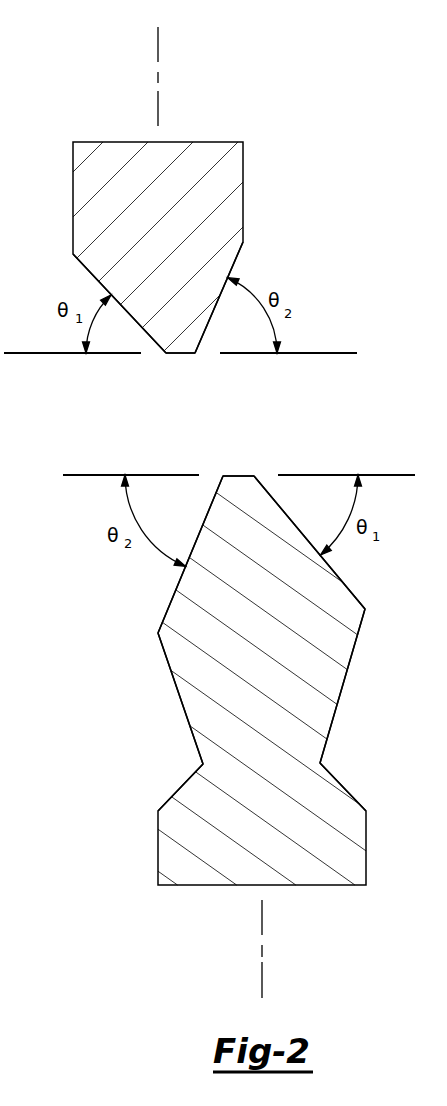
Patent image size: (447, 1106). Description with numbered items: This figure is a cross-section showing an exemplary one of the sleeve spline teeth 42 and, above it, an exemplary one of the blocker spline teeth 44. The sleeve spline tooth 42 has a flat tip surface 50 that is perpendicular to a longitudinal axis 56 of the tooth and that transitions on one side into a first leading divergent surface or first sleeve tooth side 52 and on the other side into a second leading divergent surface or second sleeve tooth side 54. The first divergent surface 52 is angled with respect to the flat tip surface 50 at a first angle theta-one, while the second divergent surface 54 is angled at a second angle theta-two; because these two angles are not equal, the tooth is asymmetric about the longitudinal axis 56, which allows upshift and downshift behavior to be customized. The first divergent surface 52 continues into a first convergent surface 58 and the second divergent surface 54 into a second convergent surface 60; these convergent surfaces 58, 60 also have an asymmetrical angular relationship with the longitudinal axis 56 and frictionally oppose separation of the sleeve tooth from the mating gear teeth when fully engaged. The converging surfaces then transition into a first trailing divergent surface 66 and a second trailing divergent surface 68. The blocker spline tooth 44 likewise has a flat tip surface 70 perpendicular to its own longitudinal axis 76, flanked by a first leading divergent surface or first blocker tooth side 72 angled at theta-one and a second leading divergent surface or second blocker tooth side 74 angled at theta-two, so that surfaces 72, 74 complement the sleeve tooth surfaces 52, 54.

The sleeve spline teeth 42 is at (370, 846).
The blocker spline teeth 44 is at (248, 169).
The flat tip surface 50 is at (240, 473).
The first leading divergent surface 52 is at (347, 582).
The second leading divergent surface 54 is at (164, 618).
The longitudinal axis 56 is at (262, 980).
The first convergent surface 58 is at (343, 687).
The second convergent surface 60 is at (182, 698).
The first trailing divergent surface 66 is at (342, 783).
The second trailing divergent surface 68 is at (177, 790).
The flat tip surface 70 is at (182, 355).
The first leading divergent surface 72 is at (88, 273).
The second leading divergent surface 74 is at (236, 262).
The longitudinal axis 76 is at (158, 47).